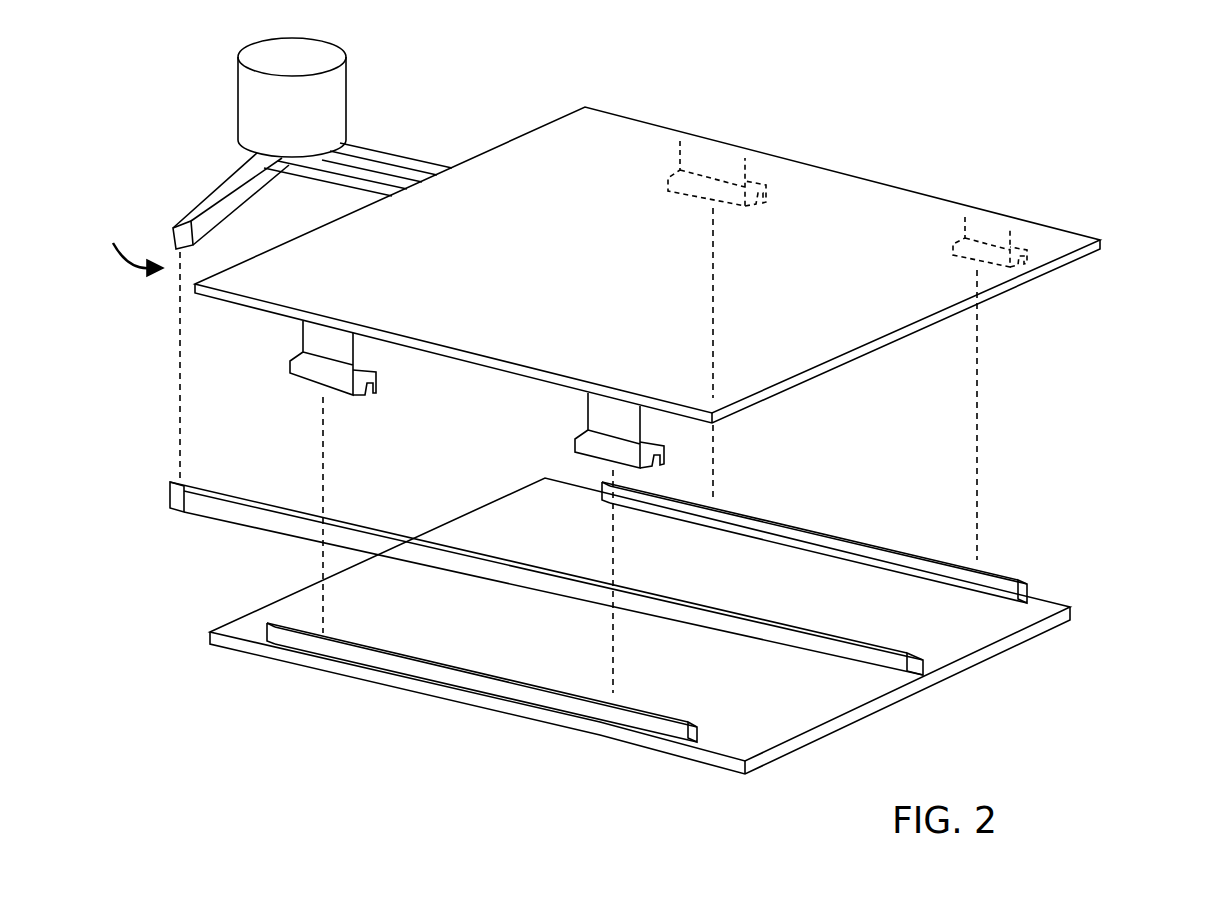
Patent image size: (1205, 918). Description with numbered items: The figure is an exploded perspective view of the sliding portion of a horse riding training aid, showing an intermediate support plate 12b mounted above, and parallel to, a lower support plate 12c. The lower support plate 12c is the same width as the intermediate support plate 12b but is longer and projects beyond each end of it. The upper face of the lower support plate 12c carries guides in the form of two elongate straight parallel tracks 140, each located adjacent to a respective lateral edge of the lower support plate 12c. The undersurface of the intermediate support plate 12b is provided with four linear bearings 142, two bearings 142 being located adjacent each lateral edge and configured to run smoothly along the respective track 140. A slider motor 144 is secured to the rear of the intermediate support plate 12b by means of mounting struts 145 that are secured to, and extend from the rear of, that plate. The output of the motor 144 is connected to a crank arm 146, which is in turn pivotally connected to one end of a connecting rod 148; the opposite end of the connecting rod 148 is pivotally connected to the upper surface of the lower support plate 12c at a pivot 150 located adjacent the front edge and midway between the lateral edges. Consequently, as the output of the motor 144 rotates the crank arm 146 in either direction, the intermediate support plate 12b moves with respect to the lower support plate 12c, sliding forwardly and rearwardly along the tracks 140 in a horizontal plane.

The intermediate support plate 12b is at (1090, 258).
The lower support plate 12c is at (1072, 620).
The tracks 140 is at (1007, 576).
The linear bearings 142 is at (732, 130).
The slider motor 144 is at (262, 105).
The mounting struts 145 is at (378, 152).
The crank arm 146 is at (207, 197).
The connecting rod 148 is at (208, 505).
The pivot 150 is at (933, 678).